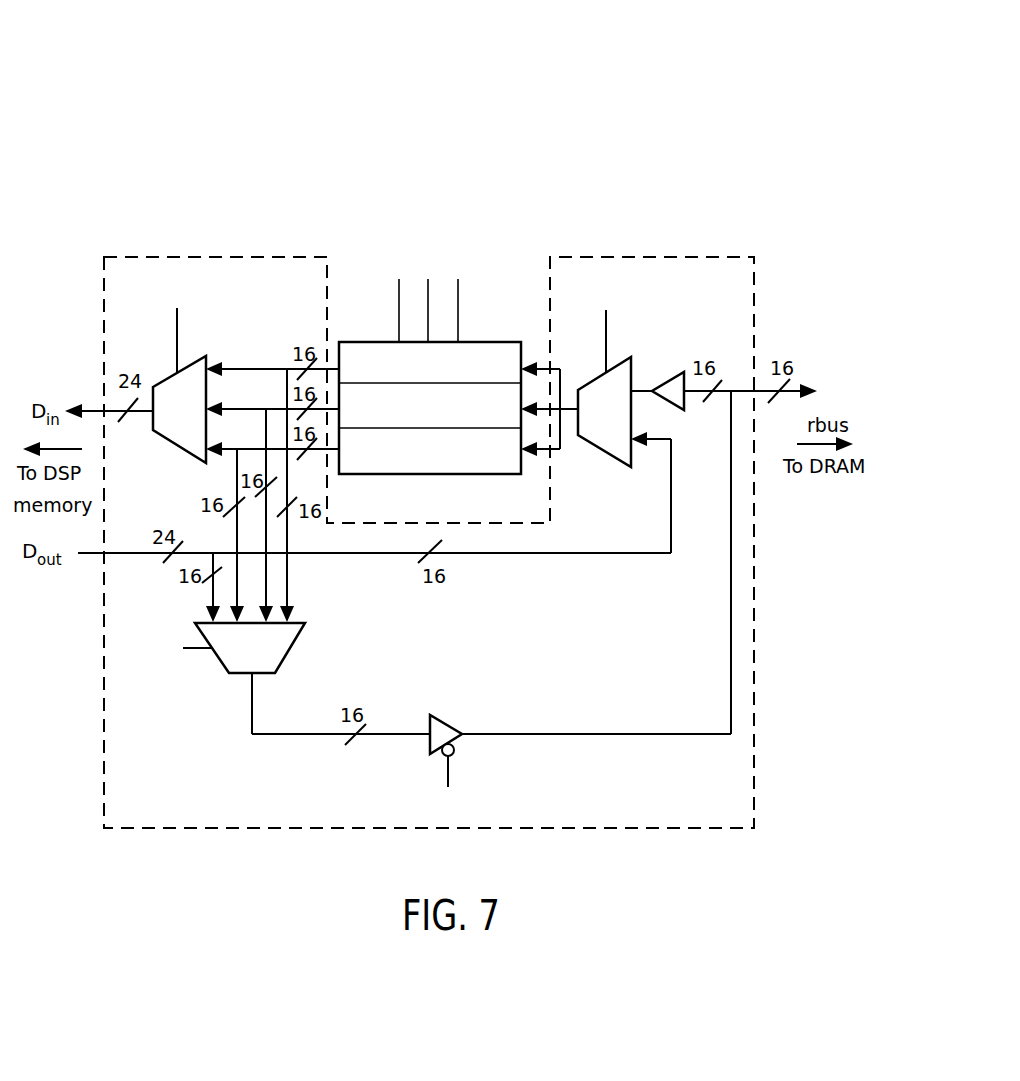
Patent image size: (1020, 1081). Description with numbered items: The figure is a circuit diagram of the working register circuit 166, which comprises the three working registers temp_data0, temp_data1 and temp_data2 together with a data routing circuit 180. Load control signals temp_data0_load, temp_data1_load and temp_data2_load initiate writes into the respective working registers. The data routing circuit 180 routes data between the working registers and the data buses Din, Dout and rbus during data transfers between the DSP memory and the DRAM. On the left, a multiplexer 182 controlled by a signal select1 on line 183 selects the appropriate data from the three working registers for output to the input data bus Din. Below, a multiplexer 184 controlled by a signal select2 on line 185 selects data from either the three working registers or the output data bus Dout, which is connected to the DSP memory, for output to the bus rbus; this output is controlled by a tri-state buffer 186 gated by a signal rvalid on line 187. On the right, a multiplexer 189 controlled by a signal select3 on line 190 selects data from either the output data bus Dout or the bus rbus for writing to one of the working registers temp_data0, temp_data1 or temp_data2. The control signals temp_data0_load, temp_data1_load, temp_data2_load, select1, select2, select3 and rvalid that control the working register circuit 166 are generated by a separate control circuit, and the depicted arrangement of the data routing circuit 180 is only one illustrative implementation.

The working register circuit 166 is at (450, 47).
The data routing circuit 180 is at (637, 258).
The multiplexer 182 is at (182, 450).
The line 183 is at (176, 352).
The multiplexer 184 is at (290, 650).
The line 185 is at (202, 650).
The tri-state buffer 186 is at (447, 724).
The line 187 is at (450, 775).
The multiplexer 189 is at (612, 456).
The line 190 is at (605, 352).